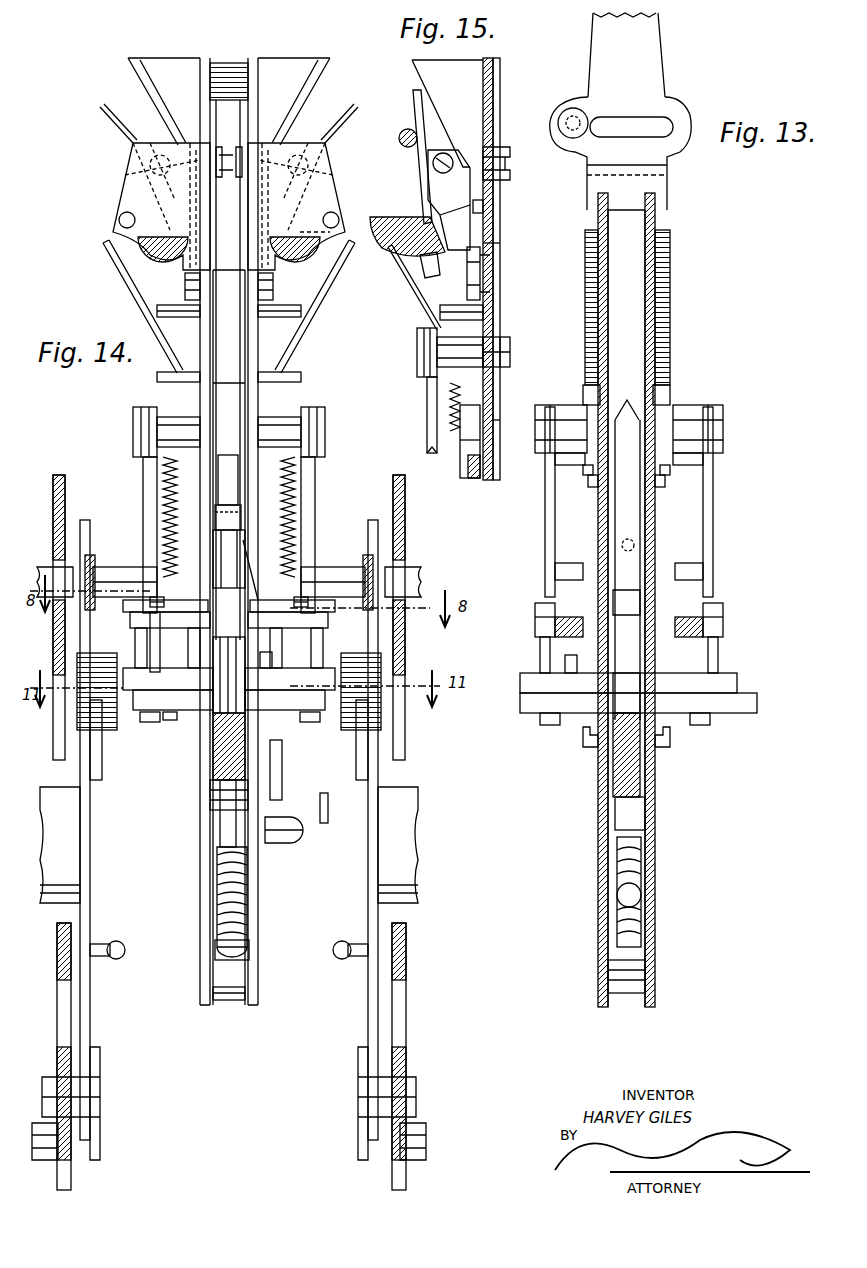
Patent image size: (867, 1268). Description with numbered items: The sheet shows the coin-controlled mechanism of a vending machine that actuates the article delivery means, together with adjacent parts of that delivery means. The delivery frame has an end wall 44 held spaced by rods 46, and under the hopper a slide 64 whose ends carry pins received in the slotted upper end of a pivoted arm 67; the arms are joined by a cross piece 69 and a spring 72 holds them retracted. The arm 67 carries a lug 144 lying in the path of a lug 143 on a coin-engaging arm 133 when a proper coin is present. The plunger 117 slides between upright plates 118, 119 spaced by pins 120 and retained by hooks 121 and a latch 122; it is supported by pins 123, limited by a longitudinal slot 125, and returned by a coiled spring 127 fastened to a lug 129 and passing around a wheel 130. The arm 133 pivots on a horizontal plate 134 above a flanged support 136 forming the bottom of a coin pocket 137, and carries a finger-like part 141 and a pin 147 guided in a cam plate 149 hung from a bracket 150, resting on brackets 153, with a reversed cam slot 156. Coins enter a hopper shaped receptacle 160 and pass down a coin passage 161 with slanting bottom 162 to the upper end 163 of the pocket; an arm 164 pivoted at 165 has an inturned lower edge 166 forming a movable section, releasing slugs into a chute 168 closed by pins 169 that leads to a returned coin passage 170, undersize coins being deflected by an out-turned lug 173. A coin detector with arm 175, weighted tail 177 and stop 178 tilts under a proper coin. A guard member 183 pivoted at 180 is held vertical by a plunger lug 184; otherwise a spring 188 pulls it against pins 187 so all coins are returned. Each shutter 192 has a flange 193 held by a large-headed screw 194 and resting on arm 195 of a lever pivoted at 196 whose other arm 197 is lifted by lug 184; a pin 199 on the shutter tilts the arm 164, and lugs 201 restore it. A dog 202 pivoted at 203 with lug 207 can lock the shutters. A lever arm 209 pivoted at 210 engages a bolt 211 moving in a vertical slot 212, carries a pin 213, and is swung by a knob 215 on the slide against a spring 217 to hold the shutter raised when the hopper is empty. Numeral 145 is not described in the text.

In FIG. 14, the end wall 44 is at (57, 968).
In FIG. 14, the rods 46 is at (45, 1150).
In FIG. 14, the slide 64 is at (50, 570).
In FIG. 14, the arm 67 is at (90, 990).
In FIG. 14, the cross piece 69 is at (65, 845).
In FIG. 14, the spring 72 is at (117, 940).
In FIG. 14, the plunger 117 is at (213, 795).
In FIG. 13, the plunger 117 is at (608, 800).
In FIG. 14, the upright plate 118 is at (200, 835).
In FIG. 15, the upright plate 118 is at (485, 92).
In FIG. 13, the upright plate 118 is at (598, 325).
In FIG. 14, the upright plate 119 is at (258, 945).
In FIG. 13, the upright plate 119 is at (655, 325).
In FIG. 14, the pins 120 is at (213, 993).
In FIG. 13, the pins 120 is at (645, 978).
In FIG. 14, the hooks 121 is at (232, 83).
In FIG. 13, the latch 122 is at (640, 86).
In FIG. 14, the pins 123 is at (213, 800).
In FIG. 13, the longitudinal slot 125 is at (613, 770).
In FIG. 14, the coiled spring 127 is at (217, 905).
In FIG. 13, the coiled spring 127 is at (617, 925).
In FIG. 13, the lug 129 is at (615, 818).
In FIG. 14, the wheel 130 is at (217, 948).
In FIG. 13, the wheel 130 is at (641, 875).
In FIG. 14, the coin-engaging arm 133 is at (160, 690).
In FIG. 13, the coin-engaging arm 133 is at (530, 683).
In FIG. 14, the horizontal plate 134 is at (272, 660).
In FIG. 13, the horizontal plate 134 is at (570, 685).
In FIG. 14, the flanged support 136 is at (170, 720).
In FIG. 13, the flanged support 136 is at (585, 745).
In FIG. 13, the coin pocket 137 is at (545, 540).
In FIG. 14, the finger-like part 141 is at (150, 722).
In FIG. 13, the finger-like part 141 is at (548, 725).
In FIG. 14, the lug 143 is at (112, 730).
In FIG. 13, the lug 143 is at (520, 705).
In FIG. 14, the lug 144 is at (90, 740).
In FIG. 14, the pin 145 is at (160, 640).
In FIG. 14, the pin 147 is at (135, 648).
In FIG. 13, the pin 147 is at (540, 645).
In FIG. 14, the cam plate 149 is at (155, 597).
In FIG. 13, the cam plate 149 is at (565, 617).
In FIG. 13, the bracket 150 is at (535, 615).
In FIG. 14, the brackets 153 is at (140, 622).
In FIG. 14, the cam slot 156 is at (140, 612).
In FIG. 14, the hopper shaped receptacle 160 is at (142, 84).
In FIG. 15, the hopper shaped receptacle 160 is at (420, 76).
In FIG. 15, the coin passage 161 is at (467, 287).
In FIG. 15, the slanting bottom 162 is at (490, 280).
In FIG. 13, the upper end of pocket 163 is at (590, 290).
In FIG. 14, the arm 164 is at (125, 150).
In FIG. 15, the arm 164 is at (430, 196).
In FIG. 14, the pivot 165 is at (125, 180).
In FIG. 15, the pivot 165 is at (433, 165).
In FIG. 14, the inturned lower edge 166 is at (185, 282).
In FIG. 15, the inturned lower edge 166 is at (450, 240).
In FIG. 14, the chute 168 is at (140, 318).
In FIG. 15, the chute 168 is at (445, 310).
In FIG. 14, the pins 169 is at (187, 318).
In FIG. 15, the pins 169 is at (440, 318).
In FIG. 14, the returned coin passage 170 is at (245, 500).
In FIG. 15, the returned coin passage 170 is at (451, 468).
In FIG. 14, the out-turned lug 173 is at (190, 143).
In FIG. 15, the out-turned lug 173 is at (483, 205).
In FIG. 13, the arm 175 is at (586, 395).
In FIG. 13, the weighted tail portion 177 is at (588, 475).
In FIG. 13, the stop 178 is at (588, 485).
In FIG. 13, the pivot 180 is at (642, 605).
In FIG. 14, the guard member 183 is at (248, 548).
In FIG. 13, the guard member 183 is at (642, 570).
In FIG. 14, the lug 184 is at (225, 690).
In FIG. 13, the lug 184 is at (640, 705).
In FIG. 13, the pins 187 is at (627, 420).
In FIG. 13, the spring 188 is at (660, 520).
In FIG. 14, the shutter 192 is at (130, 214).
In FIG. 14, the flange 193 is at (225, 383).
In FIG. 15, the flange 193 is at (500, 247).
In FIG. 14, the large-headed screw 194 is at (222, 147).
In FIG. 15, the large-headed screw 194 is at (512, 163).
In FIG. 14, the arm 195 is at (220, 515).
In FIG. 15, the arm 195 is at (496, 430).
In FIG. 14, the pivot 196 is at (300, 510).
In FIG. 14, the arm 197 is at (215, 745).
In FIG. 14, the pin 199 is at (330, 232).
In FIG. 15, the pin 199 is at (405, 130).
In FIG. 14, the lugs 201 is at (165, 252).
In FIG. 15, the lugs 201 is at (412, 258).
In FIG. 14, the dog 202 is at (278, 800).
In FIG. 14, the pivot 203 is at (292, 843).
In FIG. 14, the lug 207 is at (324, 823).
In FIG. 14, the lever arm 209 is at (147, 463).
In FIG. 15, the lever arm 209 is at (427, 425).
In FIG. 14, the pivot 210 is at (165, 417).
In FIG. 15, the pivot 210 is at (500, 460).
In FIG. 13, the pivot 210 is at (700, 425).
In FIG. 14, the bolt 211 is at (165, 432).
In FIG. 15, the bolt 211 is at (445, 352).
In FIG. 13, the bolt 211 is at (705, 458).
In FIG. 15, the vertical slot 212 is at (510, 352).
In FIG. 13, the pin 213 is at (555, 572).
In FIG. 14, the knob 215 is at (110, 567).
In FIG. 14, the spring 217 is at (170, 497).
In FIG. 15, the spring 217 is at (455, 395).